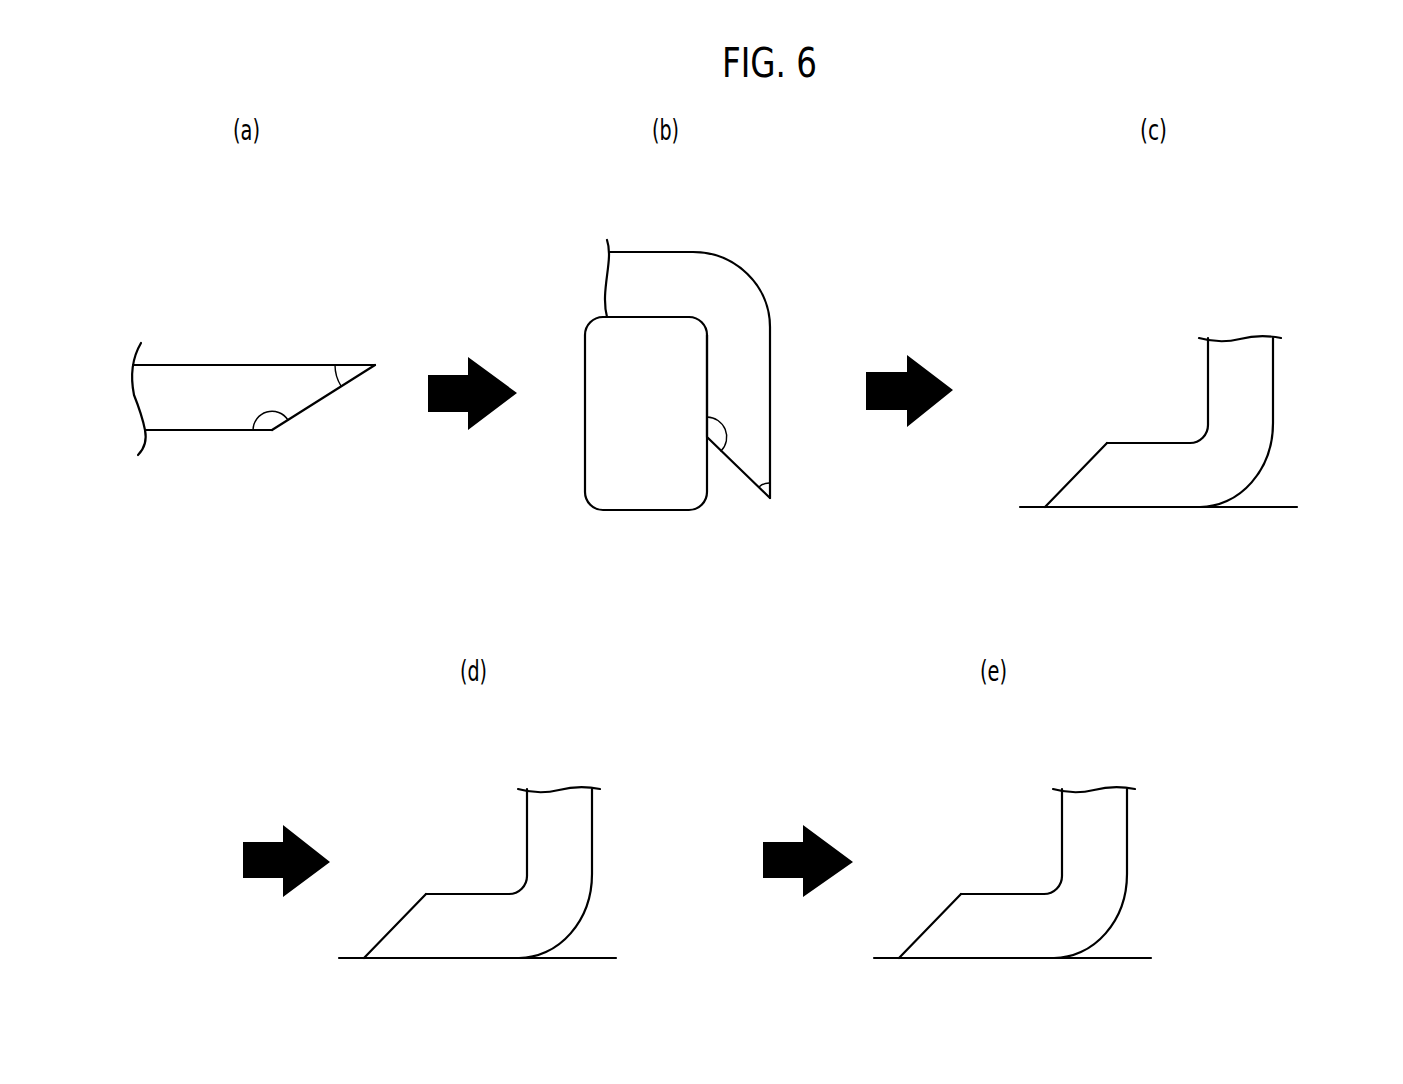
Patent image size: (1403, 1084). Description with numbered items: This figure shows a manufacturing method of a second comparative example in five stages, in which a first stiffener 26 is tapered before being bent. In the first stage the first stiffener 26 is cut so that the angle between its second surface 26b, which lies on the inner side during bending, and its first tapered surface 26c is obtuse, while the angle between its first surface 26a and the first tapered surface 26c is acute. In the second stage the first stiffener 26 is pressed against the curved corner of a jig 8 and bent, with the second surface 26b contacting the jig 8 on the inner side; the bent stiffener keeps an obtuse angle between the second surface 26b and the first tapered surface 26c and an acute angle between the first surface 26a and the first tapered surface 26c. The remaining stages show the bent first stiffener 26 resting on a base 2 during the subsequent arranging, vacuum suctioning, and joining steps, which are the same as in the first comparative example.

The first stiffener 26 is at (317, 311).
The first surface 26a is at (197, 365).
The second surface 26b is at (187, 433).
The first tapered surface 26c is at (302, 412).
The jig 8 is at (642, 510).
The base surface 2 is at (1282, 505).